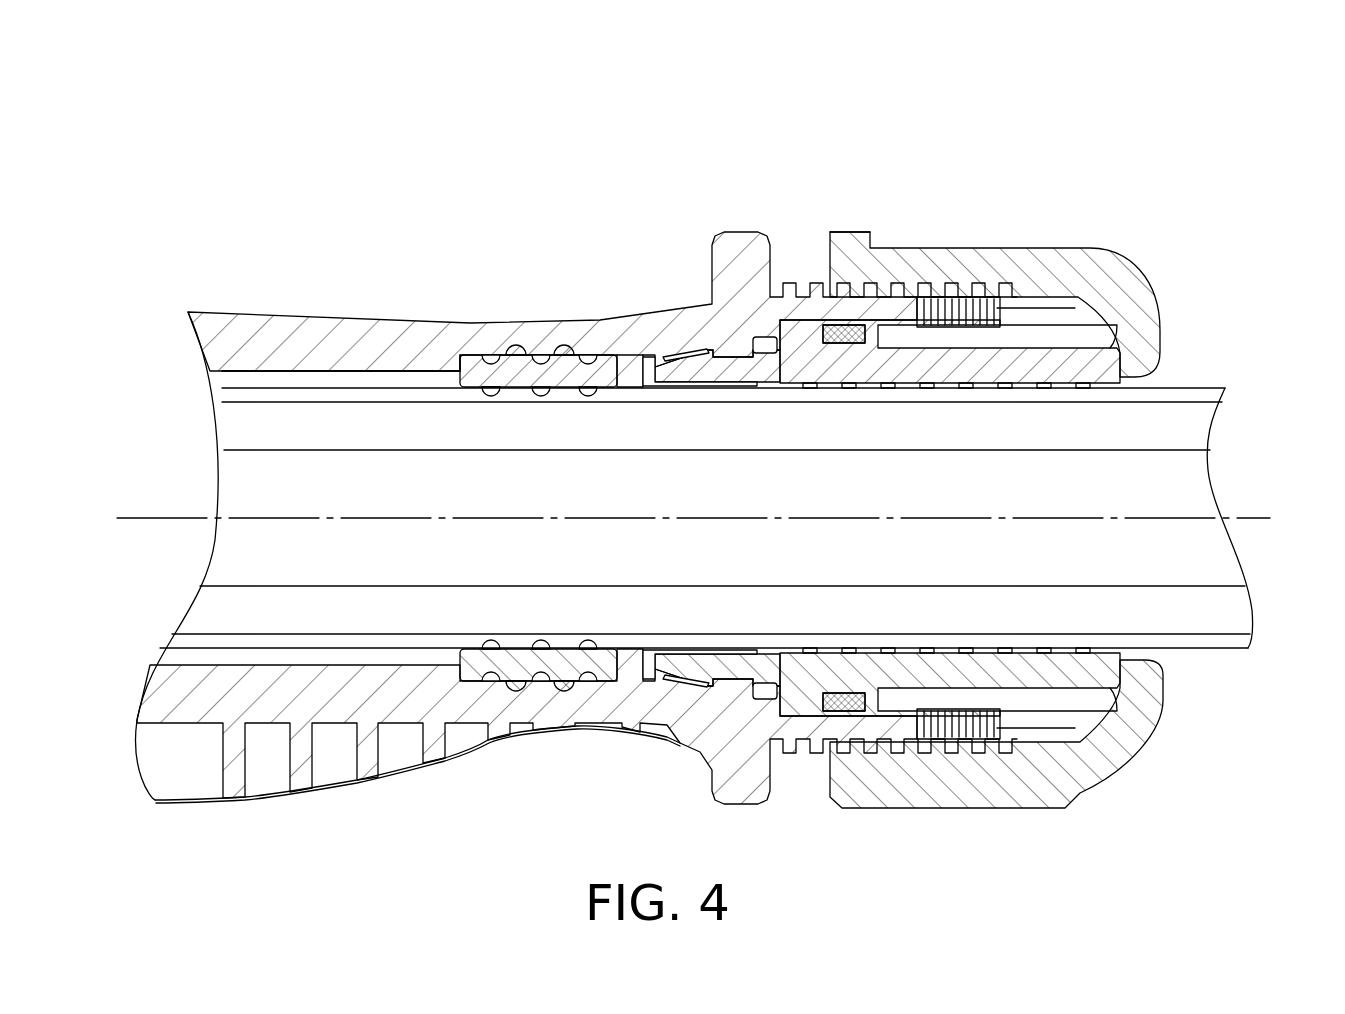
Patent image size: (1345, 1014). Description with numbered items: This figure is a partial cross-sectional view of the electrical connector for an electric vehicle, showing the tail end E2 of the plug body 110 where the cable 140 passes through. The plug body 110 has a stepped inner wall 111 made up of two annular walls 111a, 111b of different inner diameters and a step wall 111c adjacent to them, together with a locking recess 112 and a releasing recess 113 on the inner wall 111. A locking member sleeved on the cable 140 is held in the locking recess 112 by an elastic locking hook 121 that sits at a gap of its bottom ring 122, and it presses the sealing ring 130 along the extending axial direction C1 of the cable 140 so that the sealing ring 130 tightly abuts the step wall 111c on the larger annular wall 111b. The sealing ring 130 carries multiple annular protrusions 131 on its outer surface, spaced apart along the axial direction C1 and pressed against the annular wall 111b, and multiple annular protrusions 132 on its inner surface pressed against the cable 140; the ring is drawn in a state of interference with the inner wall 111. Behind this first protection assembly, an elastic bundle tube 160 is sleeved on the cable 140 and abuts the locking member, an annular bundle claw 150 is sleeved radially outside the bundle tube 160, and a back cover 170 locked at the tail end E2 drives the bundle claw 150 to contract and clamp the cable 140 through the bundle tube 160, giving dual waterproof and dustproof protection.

The plug body 110 is at (212, 312).
The inner wall 111 is at (1280, 18).
The annular wall 111a is at (332, 374).
The annular wall 111b is at (537, 363).
The step wall 111c is at (465, 362).
The locking recess 112 is at (690, 345).
The releasing recess 113 is at (745, 350).
The elastic locking hook 121 is at (700, 378).
The bottom ring 122 is at (766, 352).
The sealing ring 130 is at (565, 657).
The annular protrusions 131 is at (516, 345).
The annular protrusions 132 is at (490, 397).
The cable 140 is at (233, 427).
The annular bundle claw 150 is at (853, 333).
The bundle tube 160 is at (1027, 360).
The back cover 170 is at (1085, 250).
The tail end E2 is at (821, 143).
The extending axial direction C1 is at (672, 521).